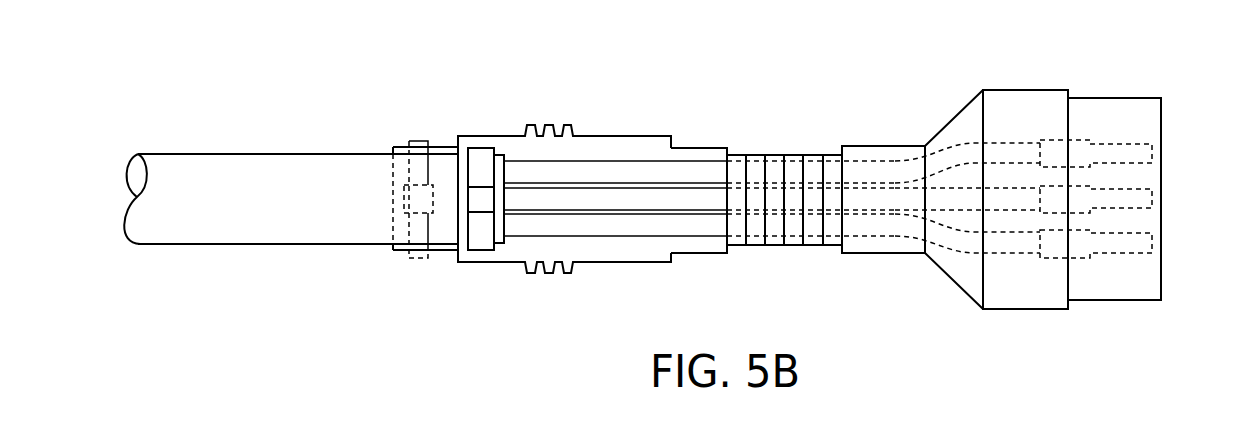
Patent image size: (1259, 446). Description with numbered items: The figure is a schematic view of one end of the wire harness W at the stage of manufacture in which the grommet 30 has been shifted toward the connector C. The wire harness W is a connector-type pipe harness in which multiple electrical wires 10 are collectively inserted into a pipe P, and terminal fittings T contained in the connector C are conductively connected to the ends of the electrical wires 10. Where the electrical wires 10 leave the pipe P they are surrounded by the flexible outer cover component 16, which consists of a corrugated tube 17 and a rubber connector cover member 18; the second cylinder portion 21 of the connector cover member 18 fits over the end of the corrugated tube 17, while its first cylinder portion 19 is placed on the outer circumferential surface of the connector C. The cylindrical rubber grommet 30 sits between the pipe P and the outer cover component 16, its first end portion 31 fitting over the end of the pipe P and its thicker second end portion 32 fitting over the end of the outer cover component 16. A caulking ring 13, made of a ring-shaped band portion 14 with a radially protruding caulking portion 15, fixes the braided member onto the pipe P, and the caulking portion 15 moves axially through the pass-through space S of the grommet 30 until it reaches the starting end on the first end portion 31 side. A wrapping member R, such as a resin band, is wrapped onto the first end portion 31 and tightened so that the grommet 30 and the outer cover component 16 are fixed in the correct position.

The pipe P is at (217, 163).
The wrapping member R is at (413, 162).
The first end portion 31 is at (402, 250).
The caulking ring 13 is at (482, 163).
The band portion 14 is at (482, 242).
The caulking portion 15 is at (482, 202).
The pass-through space S is at (584, 174).
The grommet 30 is at (632, 153).
The second end portion 32 is at (682, 150).
The wire harness W is at (708, 60).
The outer cover component 16 is at (826, 154).
The corrugated tube 17 is at (788, 172).
The connector cover member 18 is at (863, 170).
The second cylinder portion 21 is at (882, 242).
The electrical wires 10 is at (893, 168).
The first cylinder portion 19 is at (1033, 287).
The connector C is at (1115, 118).
The terminal fittings T is at (1135, 153).